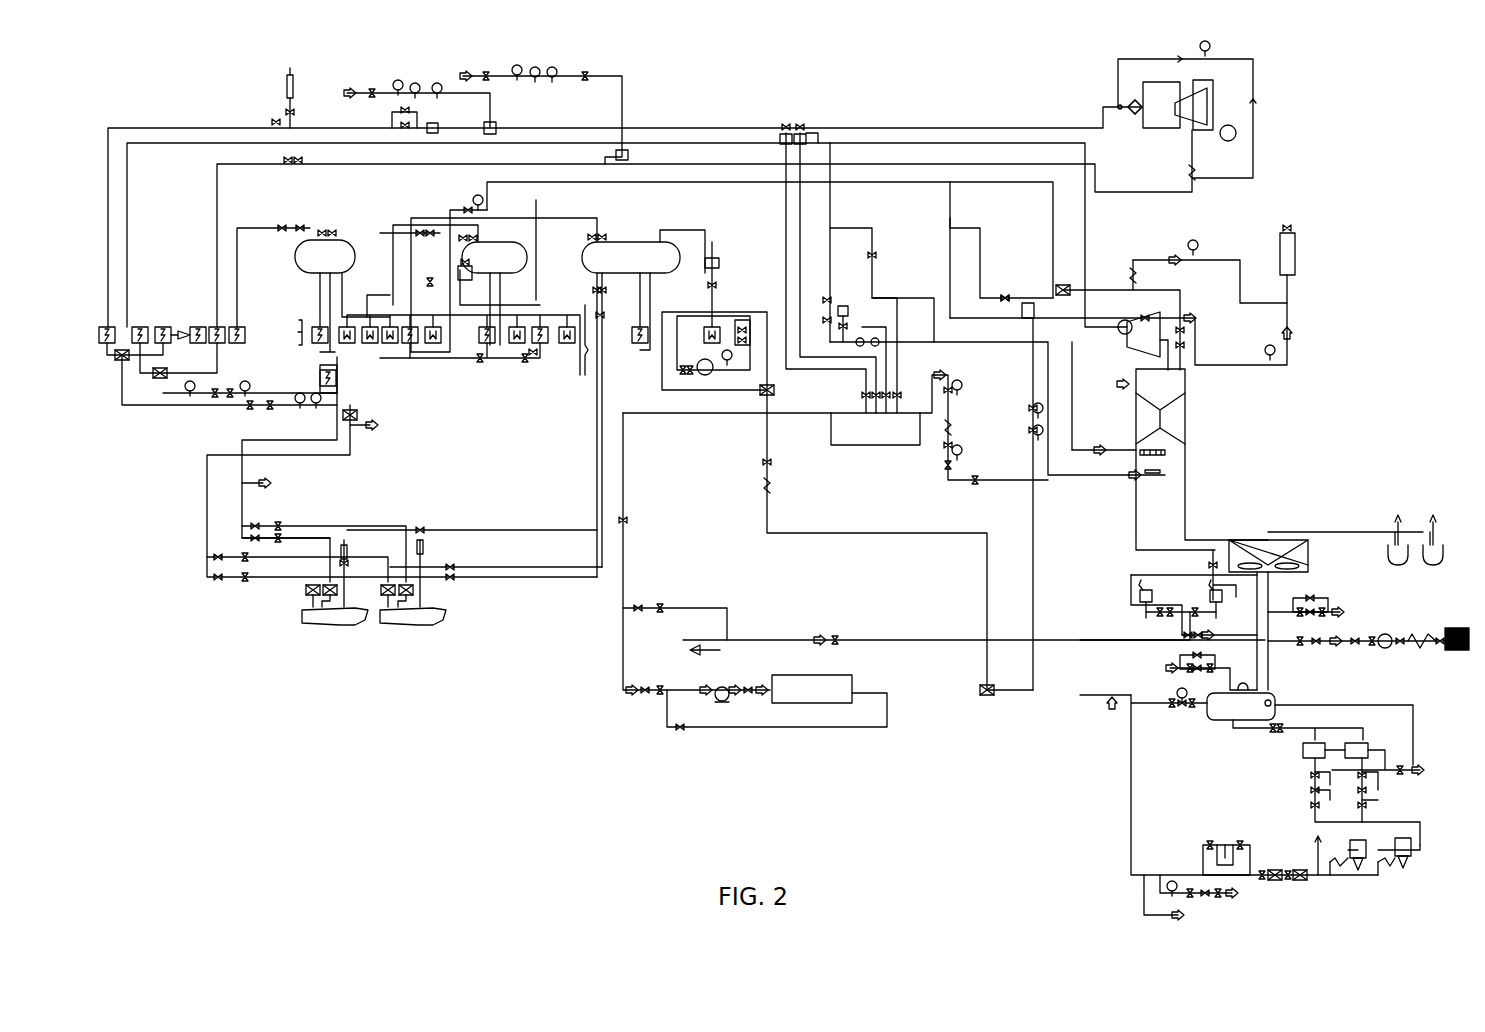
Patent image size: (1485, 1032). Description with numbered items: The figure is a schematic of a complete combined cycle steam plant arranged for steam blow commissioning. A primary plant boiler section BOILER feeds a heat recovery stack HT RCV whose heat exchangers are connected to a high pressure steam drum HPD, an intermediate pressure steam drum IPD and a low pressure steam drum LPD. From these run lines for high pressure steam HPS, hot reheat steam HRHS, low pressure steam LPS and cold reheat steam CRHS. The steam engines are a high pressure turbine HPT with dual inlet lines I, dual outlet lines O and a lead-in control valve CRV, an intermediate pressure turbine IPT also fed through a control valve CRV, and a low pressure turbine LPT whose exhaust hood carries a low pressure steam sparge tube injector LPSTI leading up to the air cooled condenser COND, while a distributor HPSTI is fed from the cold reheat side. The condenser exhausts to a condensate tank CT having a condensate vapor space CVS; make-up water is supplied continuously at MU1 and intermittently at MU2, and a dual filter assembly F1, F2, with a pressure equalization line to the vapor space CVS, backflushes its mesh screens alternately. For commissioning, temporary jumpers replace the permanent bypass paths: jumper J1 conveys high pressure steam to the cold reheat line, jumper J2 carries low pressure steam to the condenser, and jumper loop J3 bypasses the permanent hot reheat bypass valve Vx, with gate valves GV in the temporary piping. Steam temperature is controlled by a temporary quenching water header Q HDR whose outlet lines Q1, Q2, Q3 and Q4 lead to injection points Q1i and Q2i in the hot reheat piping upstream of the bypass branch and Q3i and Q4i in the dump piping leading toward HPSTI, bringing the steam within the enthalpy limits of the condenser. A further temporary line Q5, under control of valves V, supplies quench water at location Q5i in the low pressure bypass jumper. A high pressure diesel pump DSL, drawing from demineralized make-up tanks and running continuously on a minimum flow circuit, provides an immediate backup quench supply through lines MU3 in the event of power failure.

The high pressure steam line HPS is at (859, 128).
The hot reheat steam line HRHS is at (954, 143).
The cold reheat steam line CRHS is at (850, 164).
The low pressure steam line LPS is at (1025, 182).
The boiler BOILER is at (218, 346).
The high pressure steam drum HPD is at (308, 278).
The intermediate pressure steam drum IPD is at (510, 280).
The low pressure steam drum LPD is at (630, 240).
The heat recovery stack HT RCV is at (418, 340).
The quenching water header Q HDR is at (875, 429).
The quench line Q1 is at (817, 357).
The quench line Q2 is at (850, 369).
The quench line Q3 is at (900, 380).
The quench line Q4 is at (900, 360).
The temporary quench line Q5 is at (1033, 560).
The quench injection point Q1i is at (760, 135).
The quench injection point Q2i is at (790, 128).
The quench injection point Q3i is at (873, 336).
The quench injection point Q4i is at (858, 338).
The quench point Q5i is at (1028, 320).
The valve V is at (1012, 408).
The backup quench supply line MU3 is at (623, 560).
The high pressure diesel pump DSL is at (735, 690).
The temporary piping jumper J1 is at (1253, 88).
The steam inlet line I is at (1165, 82).
The high pressure turbine HPT is at (1190, 118).
The steam outlet line O is at (1210, 100).
The lead-in control valve CRV is at (1122, 105).
The low pressure bypass jumper J2 is at (1217, 260).
The governor valve GV is at (996, 298).
The permanent hot reheat bypass valve Vx is at (1027, 280).
The jumper loop J3 is at (950, 218).
The intermediate pressure turbine IPT is at (1133, 352).
The low pressure turbine LPT is at (1185, 414).
The low pressure steam sparge tube injector LPSTI is at (1140, 455).
The sparge tube distributor HPSTI is at (1133, 480).
The condenser COND is at (1252, 555).
The make-up water inlet MU1 is at (1280, 612).
The make-up water inlet MU2 is at (1172, 664).
The condensate tank CT is at (1222, 720).
The condensate vapor space CVS is at (1273, 700).
The filter F1 is at (1385, 790).
The filter F2 is at (1295, 797).